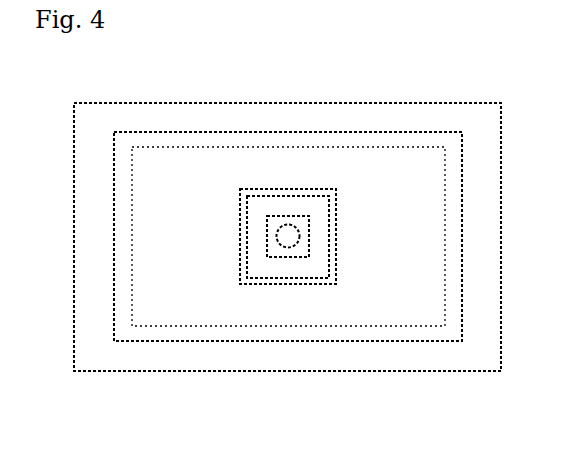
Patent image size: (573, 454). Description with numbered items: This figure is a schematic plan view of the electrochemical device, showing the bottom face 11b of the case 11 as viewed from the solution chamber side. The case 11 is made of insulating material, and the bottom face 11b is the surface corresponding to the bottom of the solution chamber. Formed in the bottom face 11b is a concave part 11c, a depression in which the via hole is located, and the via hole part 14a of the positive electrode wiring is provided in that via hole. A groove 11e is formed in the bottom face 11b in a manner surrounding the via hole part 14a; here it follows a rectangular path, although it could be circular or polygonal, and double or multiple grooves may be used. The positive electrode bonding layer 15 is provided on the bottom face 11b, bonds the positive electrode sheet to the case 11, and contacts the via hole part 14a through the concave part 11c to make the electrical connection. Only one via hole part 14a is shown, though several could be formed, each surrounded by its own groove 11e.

The case 11 is at (384, 103).
The bottom face 11b is at (236, 132).
The concave part 11c is at (273, 257).
The groove 11e is at (298, 189).
The via hole part 14a is at (288, 247).
The positive electrode bonding layer 15 is at (186, 147).